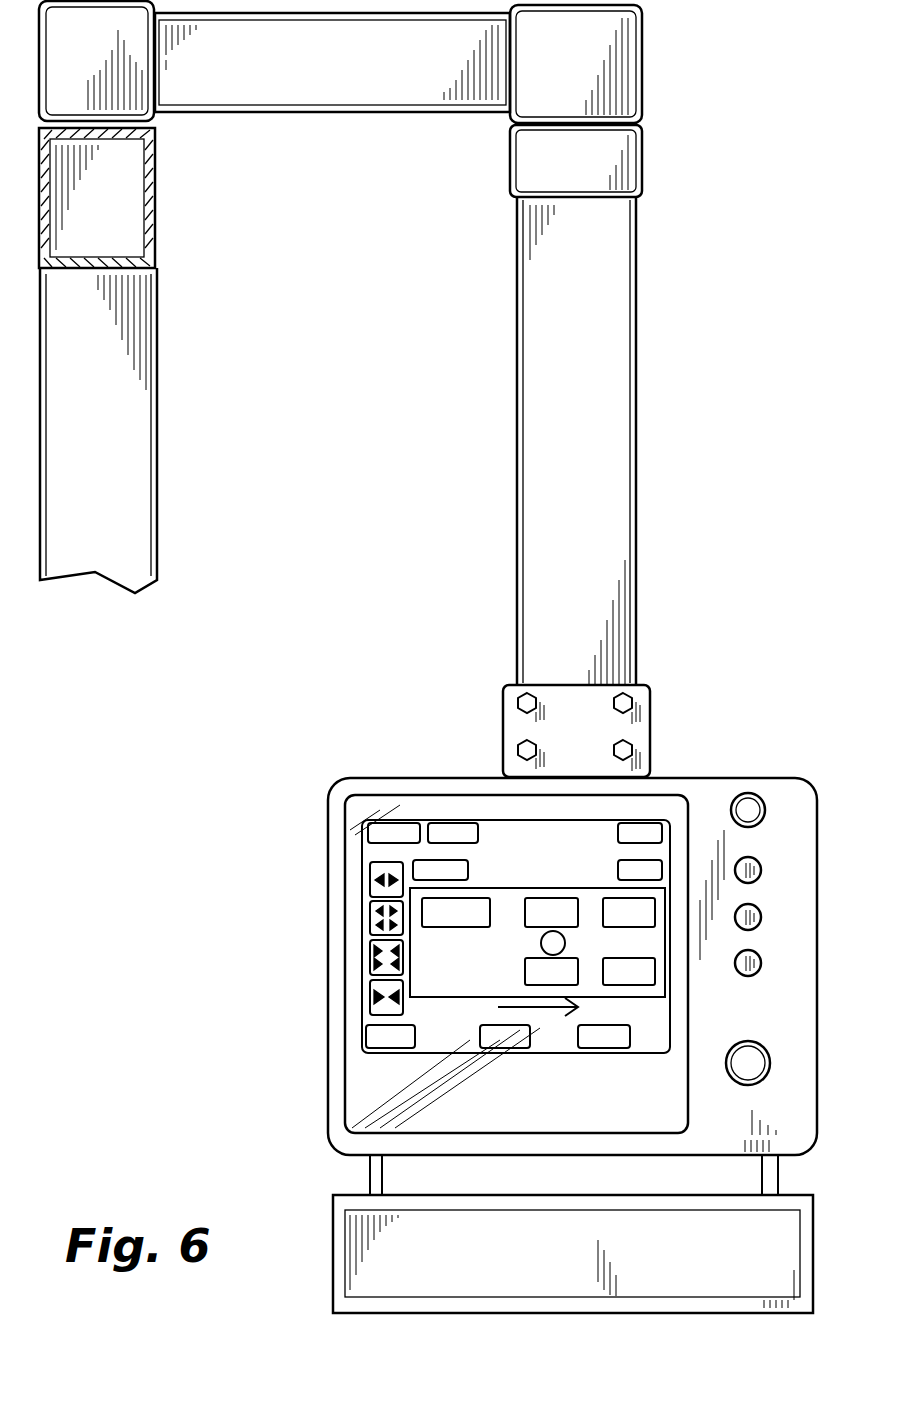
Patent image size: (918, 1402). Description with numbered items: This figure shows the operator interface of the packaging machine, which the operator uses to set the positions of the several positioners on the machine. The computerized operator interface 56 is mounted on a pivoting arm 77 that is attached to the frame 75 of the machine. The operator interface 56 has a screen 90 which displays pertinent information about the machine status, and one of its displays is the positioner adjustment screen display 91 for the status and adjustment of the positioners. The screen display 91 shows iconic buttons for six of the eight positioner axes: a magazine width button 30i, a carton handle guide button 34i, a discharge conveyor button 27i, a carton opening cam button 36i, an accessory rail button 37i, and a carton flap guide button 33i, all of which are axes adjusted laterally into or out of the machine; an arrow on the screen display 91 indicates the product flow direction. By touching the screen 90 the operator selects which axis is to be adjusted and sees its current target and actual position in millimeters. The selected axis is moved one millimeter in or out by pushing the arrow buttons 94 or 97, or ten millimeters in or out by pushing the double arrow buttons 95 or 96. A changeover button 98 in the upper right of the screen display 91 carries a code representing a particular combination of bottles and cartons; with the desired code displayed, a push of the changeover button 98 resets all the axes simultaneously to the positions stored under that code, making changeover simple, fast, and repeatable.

The pivoting arm 77 is at (342, 112).
The frame 75 is at (150, 240).
The operator interface 56 is at (374, 740).
The positioner adjustment screen display 91 is at (330, 788).
The screen 90 is at (500, 830).
The changeover button 98 is at (652, 830).
The arrow button 94 is at (370, 892).
The double arrow button 95 is at (370, 930).
The double arrow button 96 is at (370, 968).
The arrow button 97 is at (370, 1003).
The magazine width iconic button 30i is at (460, 918).
The carton handle guide iconic button 34i is at (543, 906).
The discharge conveyor iconic button 27i is at (606, 910).
The carton opening cam iconic button 36i is at (565, 943).
The accessory rail iconic button 37i is at (530, 968).
The carton flap guide iconic button 33i is at (638, 975).